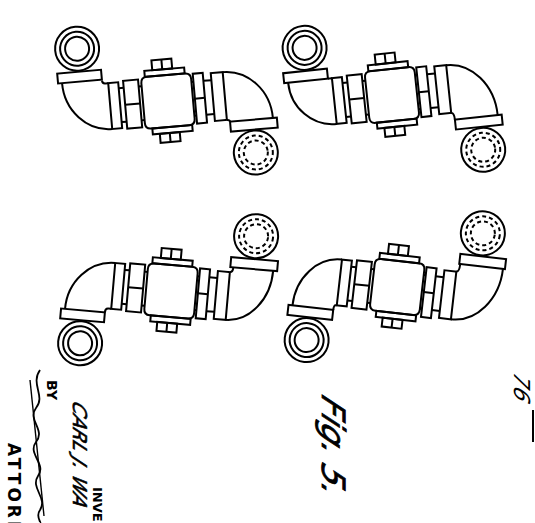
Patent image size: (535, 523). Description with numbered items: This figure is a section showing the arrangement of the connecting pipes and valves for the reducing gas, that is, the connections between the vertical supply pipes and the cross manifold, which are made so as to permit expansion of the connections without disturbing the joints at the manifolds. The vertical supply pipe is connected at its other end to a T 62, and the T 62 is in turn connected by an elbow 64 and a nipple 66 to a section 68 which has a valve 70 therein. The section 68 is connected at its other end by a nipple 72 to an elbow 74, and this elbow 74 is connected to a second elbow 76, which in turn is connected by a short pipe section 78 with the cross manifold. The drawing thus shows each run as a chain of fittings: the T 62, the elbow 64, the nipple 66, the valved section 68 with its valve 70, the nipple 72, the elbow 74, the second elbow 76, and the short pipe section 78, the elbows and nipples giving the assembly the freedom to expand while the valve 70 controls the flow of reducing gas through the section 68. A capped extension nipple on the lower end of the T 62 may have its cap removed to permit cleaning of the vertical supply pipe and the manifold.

The T 62 is at (174, 179).
The elbow 64 is at (207, 180).
The nipple 66 is at (242, 234).
The section 68 is at (259, 229).
The valve 70 is at (298, 221).
The nipple 72 is at (333, 220).
The elbow 74 is at (390, 208).
The second elbow 76 is at (234, 221).
The short pipe section 78 is at (372, 175).